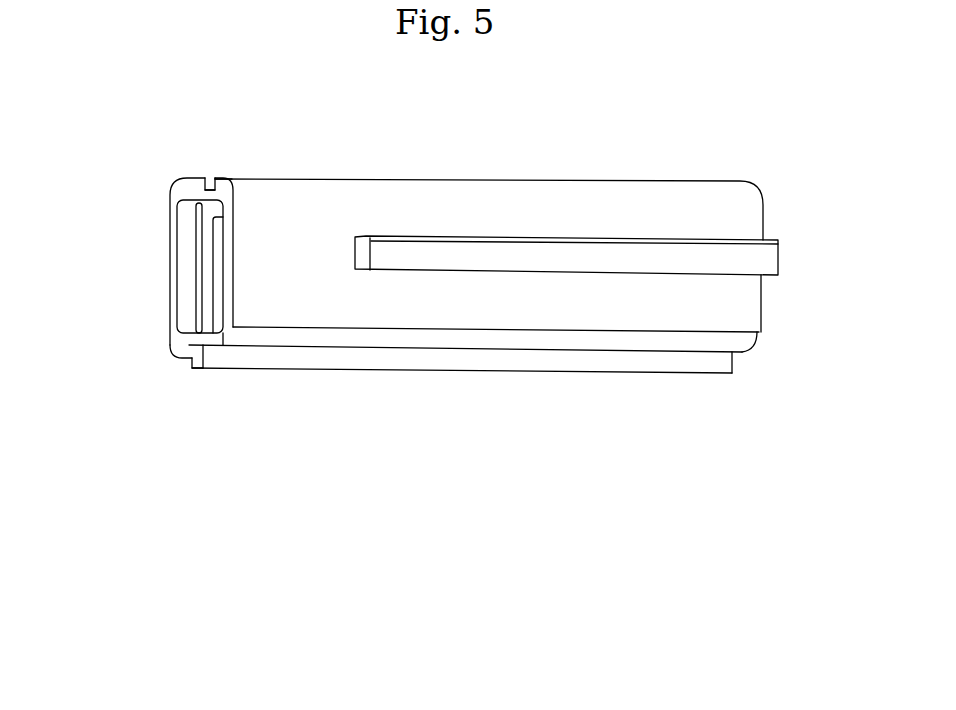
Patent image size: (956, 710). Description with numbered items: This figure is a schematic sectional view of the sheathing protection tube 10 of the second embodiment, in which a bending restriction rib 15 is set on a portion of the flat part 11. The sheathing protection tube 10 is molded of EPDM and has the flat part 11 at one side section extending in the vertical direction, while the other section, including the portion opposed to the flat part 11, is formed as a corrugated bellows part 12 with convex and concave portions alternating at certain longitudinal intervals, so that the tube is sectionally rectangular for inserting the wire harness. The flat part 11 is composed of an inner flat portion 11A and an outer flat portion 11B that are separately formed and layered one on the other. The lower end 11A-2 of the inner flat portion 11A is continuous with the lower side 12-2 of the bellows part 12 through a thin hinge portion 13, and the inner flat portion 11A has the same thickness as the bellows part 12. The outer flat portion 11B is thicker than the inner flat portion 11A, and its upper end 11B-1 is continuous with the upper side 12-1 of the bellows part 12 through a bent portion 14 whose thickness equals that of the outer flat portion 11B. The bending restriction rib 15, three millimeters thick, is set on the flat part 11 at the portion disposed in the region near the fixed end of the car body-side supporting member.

The sheathing protection tube 10 is at (253, 167).
The flat part 11 is at (447, 421).
The inner flat portion 11A is at (217, 285).
The lower end of the inner flat portion 11A-2 is at (220, 328).
The outer flat portion 11B is at (225, 247).
The upper end of the outer flat portion 11B-1 is at (228, 193).
The bellows part 12 is at (175, 190).
The upper side of the bellows part 12-1 is at (203, 176).
The lower side of the bellows part 12-2 is at (208, 372).
The thin hinge portion 13 is at (224, 364).
The bent portion 14 is at (214, 188).
The bending restriction rib 15 is at (560, 250).